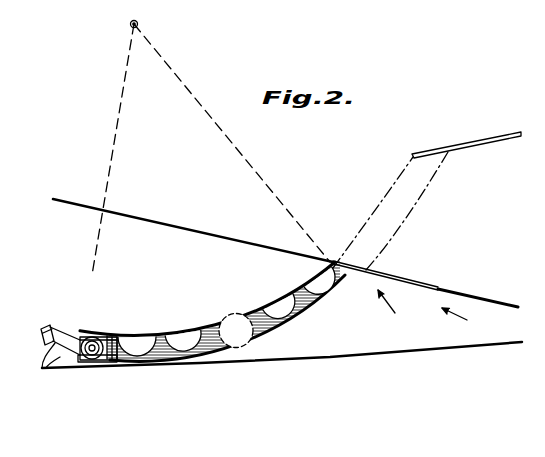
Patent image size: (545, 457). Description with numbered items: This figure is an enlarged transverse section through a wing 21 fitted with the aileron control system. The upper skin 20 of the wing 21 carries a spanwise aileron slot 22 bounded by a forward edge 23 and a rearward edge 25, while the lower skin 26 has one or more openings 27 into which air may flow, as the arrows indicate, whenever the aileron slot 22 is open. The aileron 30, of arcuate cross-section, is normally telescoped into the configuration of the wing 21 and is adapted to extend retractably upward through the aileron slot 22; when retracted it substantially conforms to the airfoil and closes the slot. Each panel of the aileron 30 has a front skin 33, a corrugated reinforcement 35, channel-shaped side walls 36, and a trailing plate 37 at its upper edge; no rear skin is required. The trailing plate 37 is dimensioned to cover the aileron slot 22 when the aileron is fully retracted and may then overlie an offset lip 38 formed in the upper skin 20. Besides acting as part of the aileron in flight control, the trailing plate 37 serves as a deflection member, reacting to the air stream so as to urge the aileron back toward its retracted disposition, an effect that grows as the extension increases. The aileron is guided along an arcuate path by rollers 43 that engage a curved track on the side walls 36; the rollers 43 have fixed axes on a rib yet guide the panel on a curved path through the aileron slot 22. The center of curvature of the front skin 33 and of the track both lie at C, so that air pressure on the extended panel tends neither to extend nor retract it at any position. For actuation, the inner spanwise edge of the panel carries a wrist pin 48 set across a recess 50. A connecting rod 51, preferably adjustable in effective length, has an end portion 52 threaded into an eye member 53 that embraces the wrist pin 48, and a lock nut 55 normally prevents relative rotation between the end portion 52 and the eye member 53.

The center of curvature C is at (132, 30).
The upper skin 20 is at (192, 228).
The wing 21 is at (106, 204).
The aileron slot 22 is at (381, 261).
The forward edge 23 is at (331, 259).
The rearward edge 25 is at (438, 287).
The lower skin 26 is at (236, 363).
The openings 27 is at (393, 333).
The aileron 30 is at (167, 325).
The front skin 33 is at (218, 325).
The corrugated reinforcement 35 is at (283, 298).
The channel-shaped side walls 36 is at (312, 314).
The trailing plate 37 is at (408, 277).
The offset lip 38 is at (436, 290).
The rollers 43 is at (238, 313).
The wrist pin 48 is at (88, 337).
The recess 50 is at (102, 337).
The connecting rod 51 is at (76, 365).
The end portion 52 is at (44, 327).
The eye member 53 is at (60, 333).
The lock nut 55 is at (66, 356).